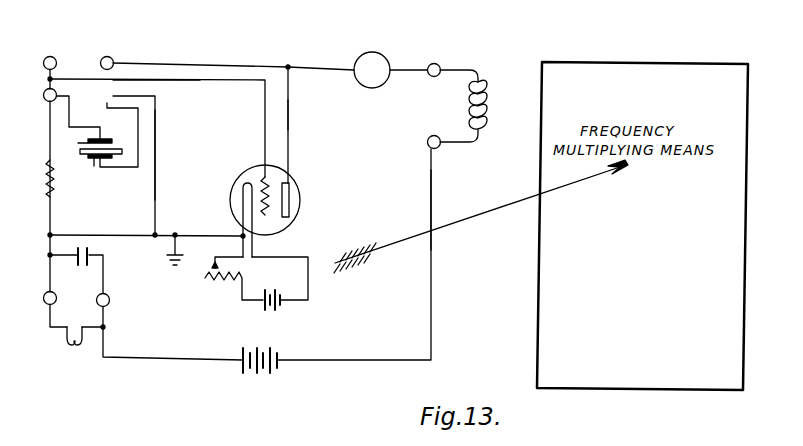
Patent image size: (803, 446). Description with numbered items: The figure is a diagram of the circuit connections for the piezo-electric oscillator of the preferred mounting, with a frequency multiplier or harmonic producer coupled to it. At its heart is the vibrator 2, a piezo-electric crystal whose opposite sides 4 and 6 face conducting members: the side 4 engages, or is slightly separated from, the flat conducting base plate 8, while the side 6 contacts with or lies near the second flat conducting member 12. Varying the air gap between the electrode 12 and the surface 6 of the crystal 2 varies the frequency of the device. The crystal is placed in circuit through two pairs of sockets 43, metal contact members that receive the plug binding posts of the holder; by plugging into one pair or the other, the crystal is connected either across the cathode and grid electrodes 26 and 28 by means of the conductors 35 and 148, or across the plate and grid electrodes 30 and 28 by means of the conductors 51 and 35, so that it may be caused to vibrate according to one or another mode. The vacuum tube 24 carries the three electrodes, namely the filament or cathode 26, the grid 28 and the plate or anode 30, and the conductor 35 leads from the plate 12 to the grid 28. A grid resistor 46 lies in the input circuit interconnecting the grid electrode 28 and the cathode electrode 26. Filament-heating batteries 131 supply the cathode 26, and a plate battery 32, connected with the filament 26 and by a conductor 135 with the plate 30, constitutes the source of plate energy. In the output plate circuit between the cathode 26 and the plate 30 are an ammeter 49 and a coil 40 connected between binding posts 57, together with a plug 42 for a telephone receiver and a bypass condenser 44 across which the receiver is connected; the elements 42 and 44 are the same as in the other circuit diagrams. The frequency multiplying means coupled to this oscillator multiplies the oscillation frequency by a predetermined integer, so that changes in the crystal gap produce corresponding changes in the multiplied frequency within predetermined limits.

The sockets 43 is at (103, 58).
The conductor 35 is at (217, 81).
The conductor 51 is at (289, 117).
The ammeter 49 is at (372, 52).
The binding posts 57 is at (428, 63).
The coil 40 is at (486, 107).
The conducting member 12 is at (111, 139).
The vibrator 2 is at (80, 152).
The side of the crystal 6 is at (79, 143).
The side of the crystal 4 is at (89, 158).
The base plate 8 is at (93, 160).
The conductor 148 is at (156, 150).
The grid resistor 46 is at (46, 182).
The grid 28 is at (296, 228).
The filament or cathode 26 is at (240, 191).
The vacuum tube 24 is at (290, 176).
The plate or anode 30 is at (292, 200).
The filament-heating batteries 131 is at (283, 304).
The plate battery 32 is at (282, 367).
The bypass condenser 44 is at (93, 253).
The plug 42 is at (74, 348).
The conductor 135 is at (433, 210).